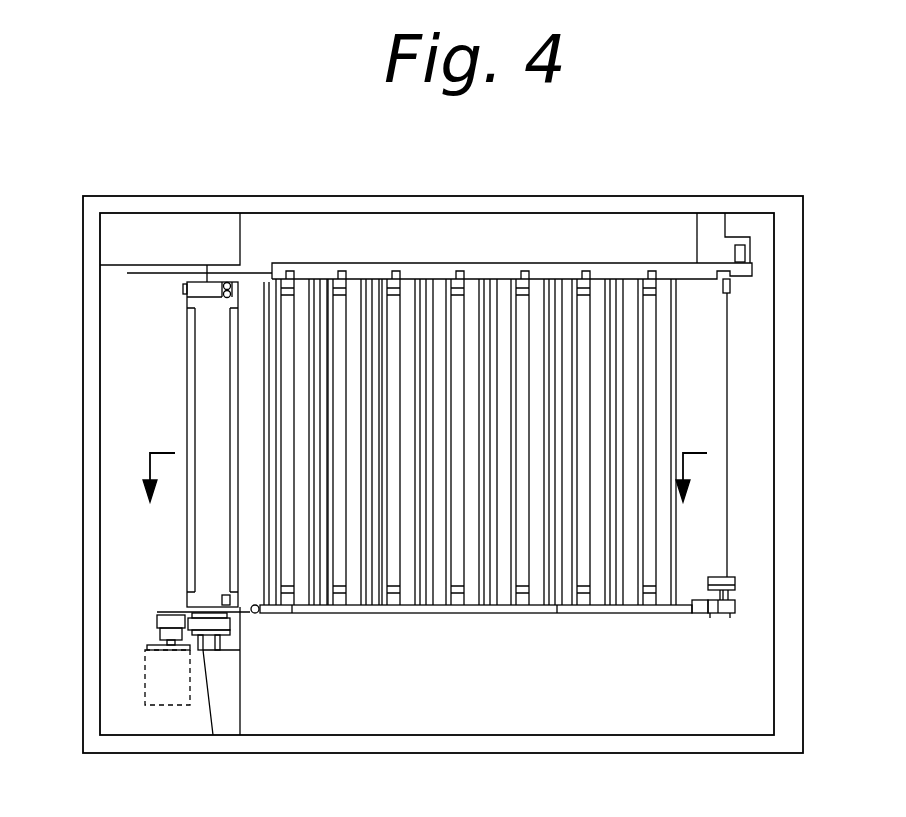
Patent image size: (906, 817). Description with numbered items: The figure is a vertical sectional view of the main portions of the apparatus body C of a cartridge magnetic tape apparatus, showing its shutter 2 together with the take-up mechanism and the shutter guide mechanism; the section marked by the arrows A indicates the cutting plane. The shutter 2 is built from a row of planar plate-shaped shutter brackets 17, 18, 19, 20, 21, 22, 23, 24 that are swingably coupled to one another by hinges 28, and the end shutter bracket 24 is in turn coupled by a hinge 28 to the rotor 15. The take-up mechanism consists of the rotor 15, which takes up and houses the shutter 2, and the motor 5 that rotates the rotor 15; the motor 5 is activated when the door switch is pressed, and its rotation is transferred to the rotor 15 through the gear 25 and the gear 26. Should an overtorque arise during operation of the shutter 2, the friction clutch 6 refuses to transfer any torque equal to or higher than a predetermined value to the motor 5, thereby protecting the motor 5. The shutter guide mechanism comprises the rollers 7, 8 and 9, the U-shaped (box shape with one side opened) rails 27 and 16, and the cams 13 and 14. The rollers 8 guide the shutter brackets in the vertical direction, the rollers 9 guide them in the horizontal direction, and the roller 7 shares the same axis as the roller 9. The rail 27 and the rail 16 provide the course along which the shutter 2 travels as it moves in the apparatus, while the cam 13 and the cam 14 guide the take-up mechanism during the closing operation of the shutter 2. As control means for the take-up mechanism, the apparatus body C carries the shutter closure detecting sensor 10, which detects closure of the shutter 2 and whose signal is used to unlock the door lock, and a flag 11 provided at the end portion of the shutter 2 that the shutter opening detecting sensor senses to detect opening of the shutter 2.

The shutter 2 is at (736, 395).
The motor 5 is at (162, 690).
The friction clutch 6 is at (207, 652).
The roller 7 is at (285, 318).
The rollers 8 is at (257, 613).
The rollers 9 is at (733, 613).
The shutter closure detecting sensor 10 is at (748, 253).
The flag 11 is at (733, 583).
The cam 13 is at (160, 610).
The cam 14 is at (148, 273).
The rotor 15 is at (185, 385).
The rail 16 is at (697, 300).
The shutter bracket 17 is at (728, 300).
The shutter bracket 18 is at (602, 293).
The shutter bracket 19 is at (535, 293).
The shutter bracket 20 is at (473, 300).
The shutter bracket 21 is at (428, 300).
The shutter bracket 22 is at (360, 300).
The shutter bracket 23 is at (333, 300).
The shutter bracket 24 is at (253, 295).
The gear 25 is at (160, 622).
The gear 26 is at (235, 652).
The rail 27 is at (670, 615).
The hinges 28 is at (316, 325).
The section line A- A is at (422, 499).
The apparatus body C is at (805, 512).